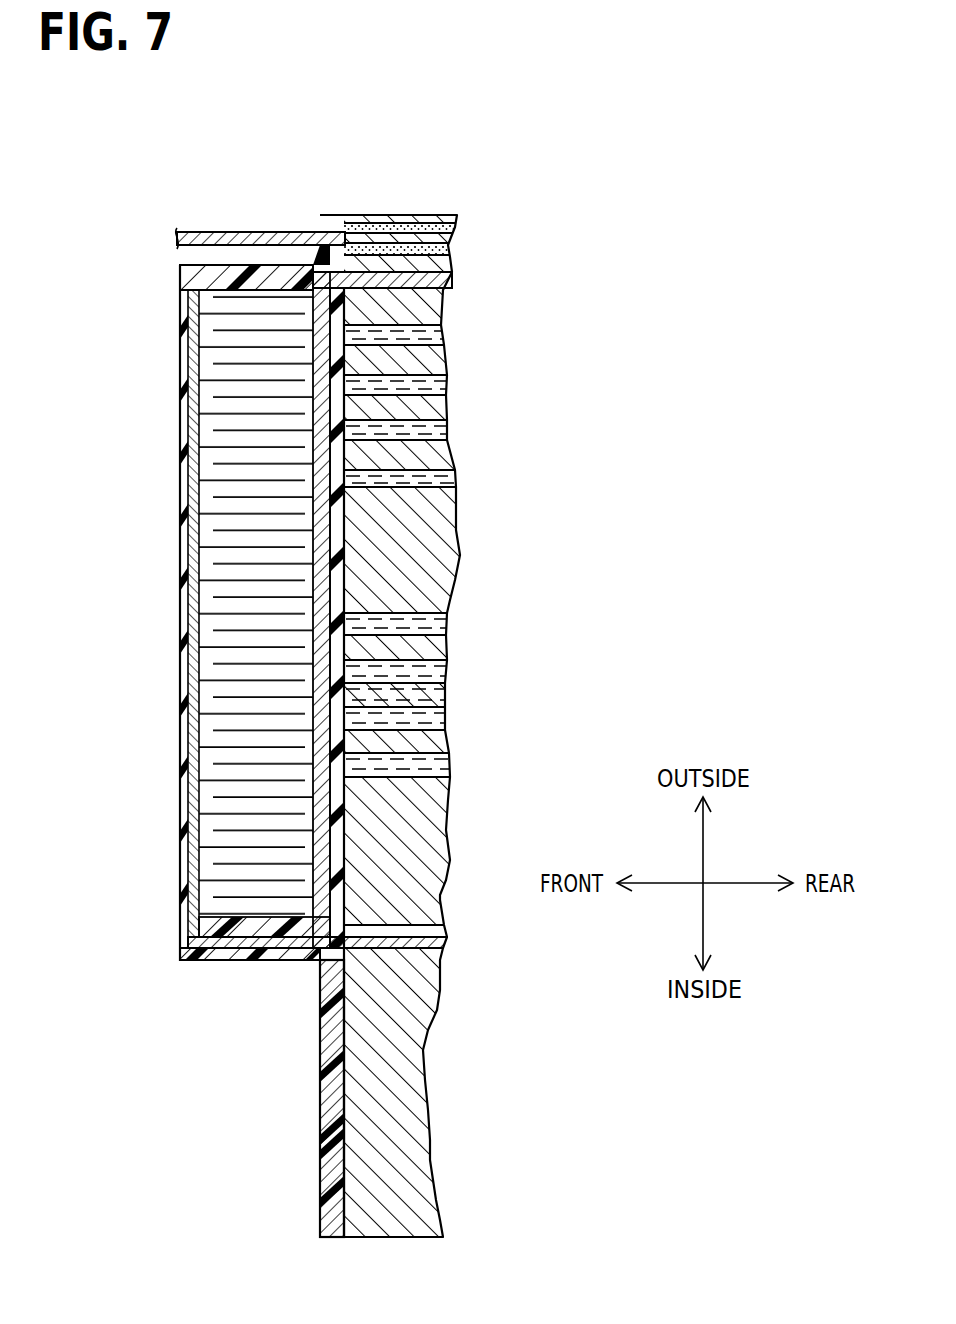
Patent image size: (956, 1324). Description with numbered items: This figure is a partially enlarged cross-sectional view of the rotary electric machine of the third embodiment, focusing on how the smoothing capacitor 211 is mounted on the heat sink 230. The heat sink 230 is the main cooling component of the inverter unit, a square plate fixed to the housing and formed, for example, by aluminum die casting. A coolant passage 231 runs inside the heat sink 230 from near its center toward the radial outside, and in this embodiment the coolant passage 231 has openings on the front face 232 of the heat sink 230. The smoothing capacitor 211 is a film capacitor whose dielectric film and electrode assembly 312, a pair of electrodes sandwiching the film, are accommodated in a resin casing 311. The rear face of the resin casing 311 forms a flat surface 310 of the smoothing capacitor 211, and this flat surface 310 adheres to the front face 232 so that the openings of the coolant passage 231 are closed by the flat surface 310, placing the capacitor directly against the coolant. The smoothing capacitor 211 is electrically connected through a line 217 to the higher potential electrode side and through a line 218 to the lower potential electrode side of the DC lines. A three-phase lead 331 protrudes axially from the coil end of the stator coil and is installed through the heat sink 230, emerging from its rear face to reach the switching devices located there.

The smoothing capacitor 211 is at (312, 1064).
The line 217 is at (317, 872).
The line 218 is at (210, 948).
The heat sink 230 is at (458, 554).
The coolant passage 231 is at (407, 380).
The front face 232 is at (342, 1143).
The flat surface 310 is at (345, 1170).
The resin casing 311 is at (196, 273).
The electrode assembly 312 is at (210, 737).
The three-phase lead 331 is at (277, 238).